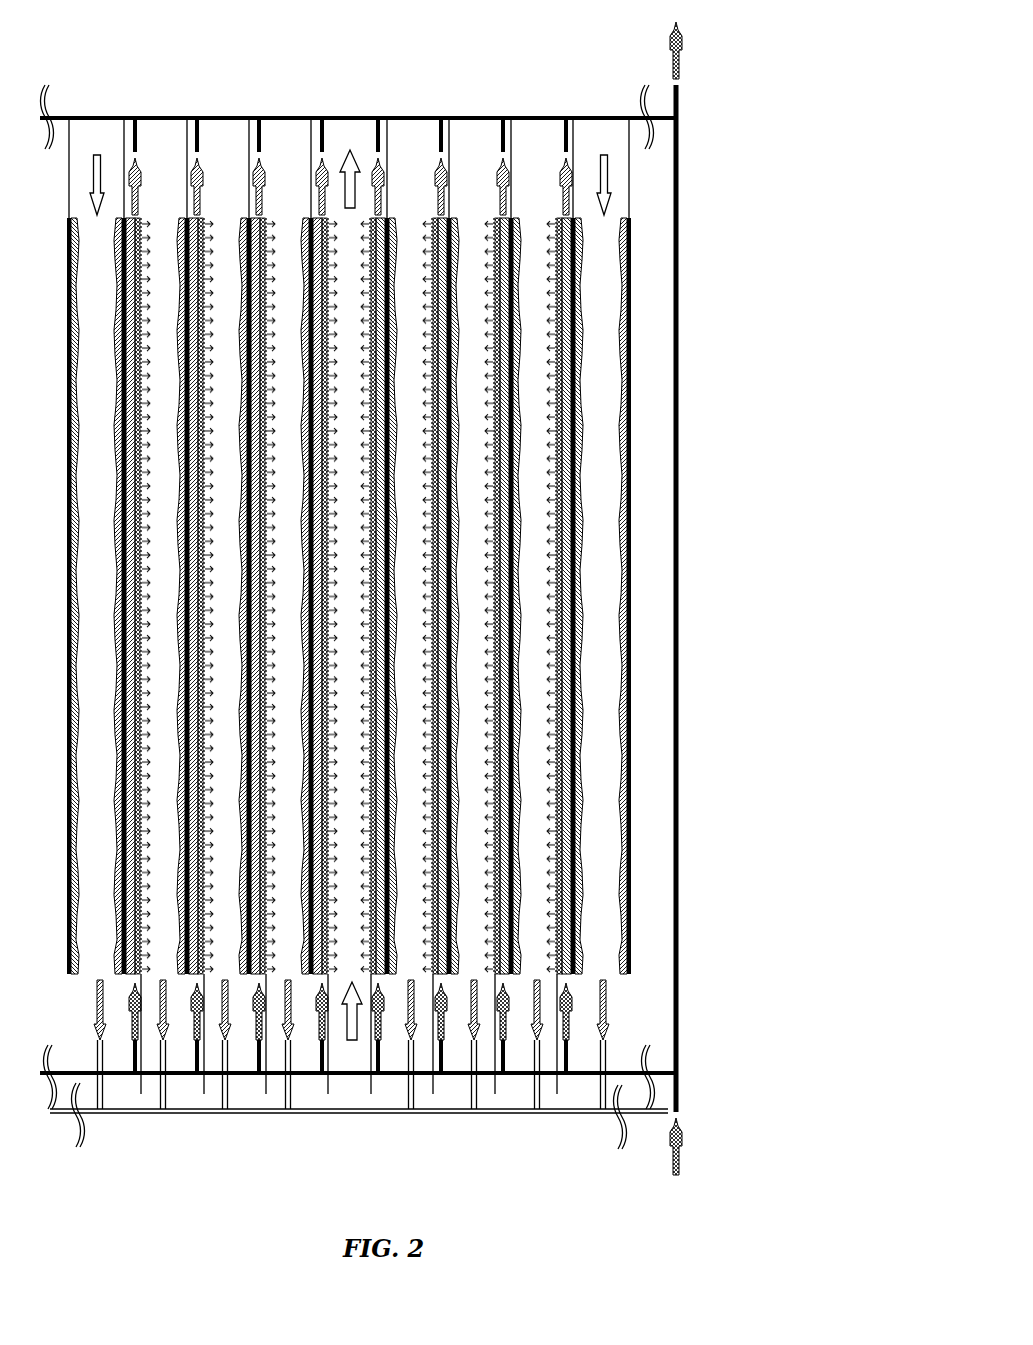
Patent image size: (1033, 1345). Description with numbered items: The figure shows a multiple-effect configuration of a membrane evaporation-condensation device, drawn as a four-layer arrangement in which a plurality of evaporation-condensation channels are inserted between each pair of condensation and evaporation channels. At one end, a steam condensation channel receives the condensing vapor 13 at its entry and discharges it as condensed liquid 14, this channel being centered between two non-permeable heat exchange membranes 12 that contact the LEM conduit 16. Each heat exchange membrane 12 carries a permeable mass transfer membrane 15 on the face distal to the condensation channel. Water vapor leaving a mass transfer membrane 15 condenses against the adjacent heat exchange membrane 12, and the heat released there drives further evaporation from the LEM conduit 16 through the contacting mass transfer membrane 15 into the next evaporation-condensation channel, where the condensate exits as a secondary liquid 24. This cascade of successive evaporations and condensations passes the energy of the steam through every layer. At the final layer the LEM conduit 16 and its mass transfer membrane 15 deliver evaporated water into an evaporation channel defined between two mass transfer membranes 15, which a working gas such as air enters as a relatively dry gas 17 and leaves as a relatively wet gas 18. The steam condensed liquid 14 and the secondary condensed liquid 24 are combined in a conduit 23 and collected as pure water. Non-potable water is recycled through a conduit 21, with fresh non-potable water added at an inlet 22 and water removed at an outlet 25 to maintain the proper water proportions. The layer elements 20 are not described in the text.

The non-permeable heat exchange membrane (HEM) 12 is at (69, 117).
The condensing vapor 13 is at (97, 153).
The condensed liquid 14 is at (97, 1030).
The mass transfer membrane (MTM/PM) 15 is at (141, 1095).
The LEM conduit 16 is at (374, 221).
The dry gas 17 is at (352, 1042).
The wet gas 18 is at (350, 148).
The catalyst layer 20 is at (140, 220).
The conduit 21 is at (679, 292).
The inlet 22 is at (677, 1176).
The conduit 23 is at (575, 1114).
The secondary liquid 24 is at (163, 1030).
The outlet 25 is at (677, 21).